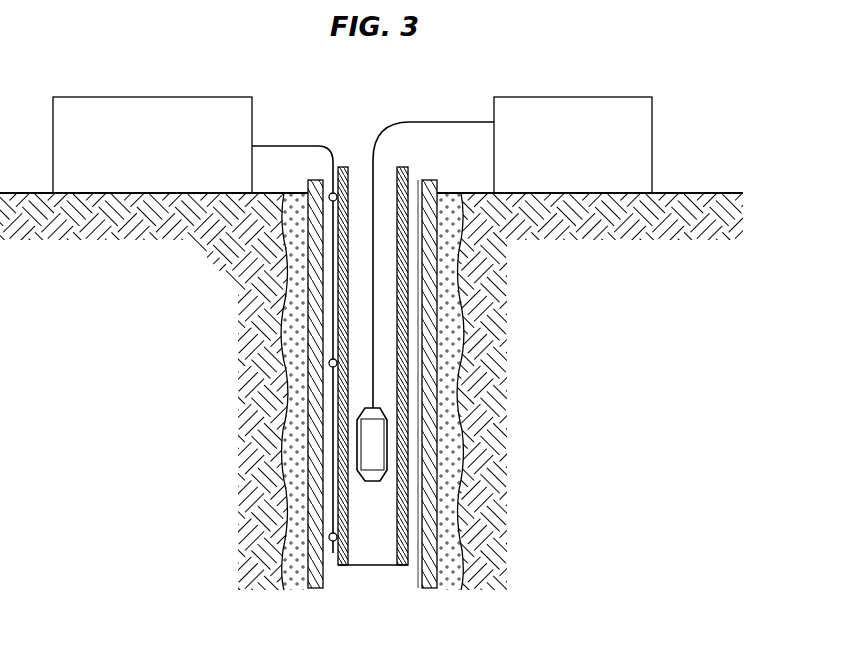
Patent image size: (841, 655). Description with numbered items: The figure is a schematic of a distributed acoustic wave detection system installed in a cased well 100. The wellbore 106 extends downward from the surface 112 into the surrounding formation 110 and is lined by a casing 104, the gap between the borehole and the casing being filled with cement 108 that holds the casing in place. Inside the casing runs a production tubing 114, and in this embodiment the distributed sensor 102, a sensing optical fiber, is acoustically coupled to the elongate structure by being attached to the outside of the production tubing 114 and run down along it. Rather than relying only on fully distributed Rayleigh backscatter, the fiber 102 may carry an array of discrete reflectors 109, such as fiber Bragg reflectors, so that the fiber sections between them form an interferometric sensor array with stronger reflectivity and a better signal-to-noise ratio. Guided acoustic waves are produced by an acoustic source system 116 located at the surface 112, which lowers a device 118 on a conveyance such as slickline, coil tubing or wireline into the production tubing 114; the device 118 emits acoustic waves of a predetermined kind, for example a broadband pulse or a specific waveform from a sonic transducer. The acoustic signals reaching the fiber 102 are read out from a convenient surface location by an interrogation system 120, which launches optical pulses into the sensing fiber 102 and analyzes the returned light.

The well 100 is at (337, 130).
The distributed sensor 102 is at (333, 393).
The casing 104 is at (437, 365).
The wellbore 106 is at (415, 348).
The cement 108 is at (297, 450).
The discrete reflectors 109 is at (329, 363).
The formation 110 is at (252, 249).
The surface 112 is at (707, 193).
The production tubing 114 is at (408, 392).
The acoustic source system 116 is at (600, 97).
The device 118 is at (380, 447).
The interrogation system 120 is at (110, 97).